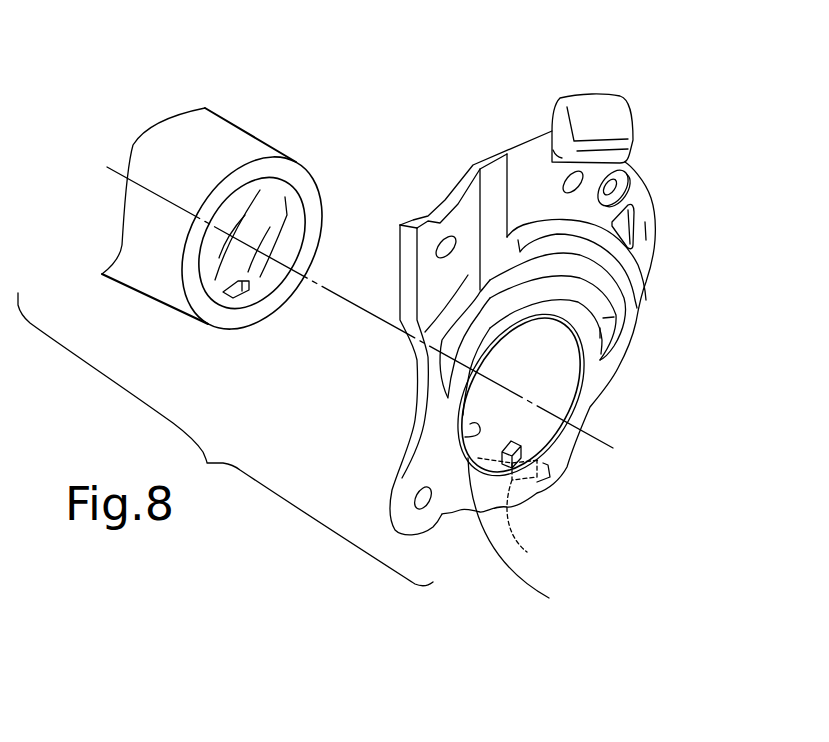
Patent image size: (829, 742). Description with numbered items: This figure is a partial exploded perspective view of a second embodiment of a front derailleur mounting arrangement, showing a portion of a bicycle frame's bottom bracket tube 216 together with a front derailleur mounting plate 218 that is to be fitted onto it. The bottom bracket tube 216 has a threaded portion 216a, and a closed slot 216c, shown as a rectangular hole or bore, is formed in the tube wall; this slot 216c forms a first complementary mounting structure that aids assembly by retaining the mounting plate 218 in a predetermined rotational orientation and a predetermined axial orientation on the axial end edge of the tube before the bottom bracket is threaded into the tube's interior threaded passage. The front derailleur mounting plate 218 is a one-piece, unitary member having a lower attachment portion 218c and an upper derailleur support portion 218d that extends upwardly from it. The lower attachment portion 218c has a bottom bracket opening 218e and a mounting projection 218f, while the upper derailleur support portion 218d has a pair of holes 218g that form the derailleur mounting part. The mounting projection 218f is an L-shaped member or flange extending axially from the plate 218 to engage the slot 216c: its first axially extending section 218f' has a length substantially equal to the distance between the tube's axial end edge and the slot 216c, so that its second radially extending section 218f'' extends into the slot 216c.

The bottom bracket tube 216 is at (236, 113).
The threaded portion 216a is at (288, 215).
The closed slot 216c is at (238, 297).
The front derailleur mounting plate 218 is at (650, 180).
The lower attachment portion 218c is at (585, 404).
The upper derailleur support portion 218d is at (542, 157).
The bottom bracket opening 218e is at (465, 437).
The mounting projection 218f is at (604, 477).
The first axially extending section 218f' is at (553, 517).
The second radially extending section 218f'' is at (556, 539).
The holes 218g is at (562, 188).